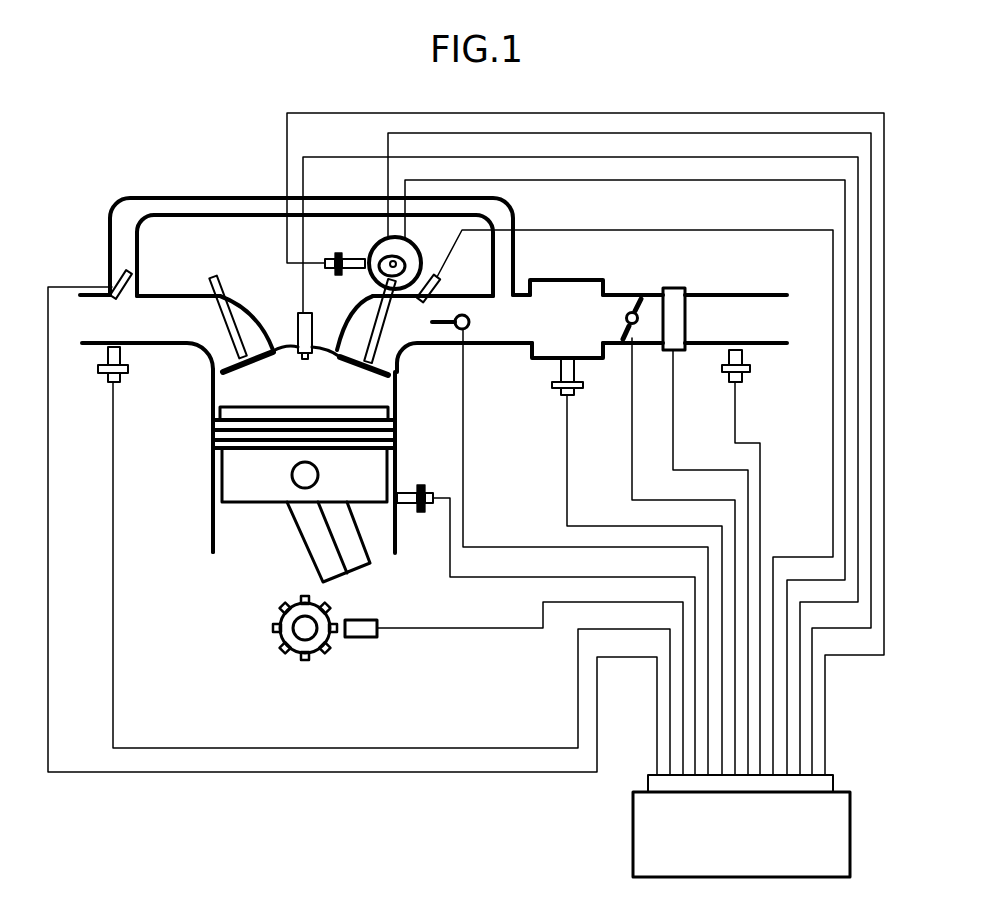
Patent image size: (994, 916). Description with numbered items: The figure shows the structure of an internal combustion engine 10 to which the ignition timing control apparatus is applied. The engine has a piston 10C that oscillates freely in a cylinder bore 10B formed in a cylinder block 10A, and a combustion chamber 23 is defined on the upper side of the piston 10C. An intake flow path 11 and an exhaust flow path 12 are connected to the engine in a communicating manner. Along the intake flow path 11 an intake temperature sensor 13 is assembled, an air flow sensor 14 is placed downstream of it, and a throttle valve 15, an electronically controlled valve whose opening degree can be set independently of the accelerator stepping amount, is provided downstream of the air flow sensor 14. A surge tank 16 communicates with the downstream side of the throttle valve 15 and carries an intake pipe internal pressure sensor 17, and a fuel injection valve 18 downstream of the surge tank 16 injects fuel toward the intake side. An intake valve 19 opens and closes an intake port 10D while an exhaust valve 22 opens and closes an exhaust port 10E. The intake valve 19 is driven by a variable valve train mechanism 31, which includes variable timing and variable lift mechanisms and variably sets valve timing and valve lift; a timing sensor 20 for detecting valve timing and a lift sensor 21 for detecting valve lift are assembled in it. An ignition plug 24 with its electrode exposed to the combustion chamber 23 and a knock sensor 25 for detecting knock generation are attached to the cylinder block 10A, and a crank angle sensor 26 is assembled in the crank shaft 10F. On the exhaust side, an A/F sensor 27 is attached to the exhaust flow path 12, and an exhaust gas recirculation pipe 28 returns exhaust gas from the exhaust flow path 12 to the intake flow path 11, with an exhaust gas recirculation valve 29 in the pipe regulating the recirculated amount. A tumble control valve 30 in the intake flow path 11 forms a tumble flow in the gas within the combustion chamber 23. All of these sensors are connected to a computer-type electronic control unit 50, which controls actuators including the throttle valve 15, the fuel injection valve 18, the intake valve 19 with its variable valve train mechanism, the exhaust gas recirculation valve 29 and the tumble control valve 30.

The internal combustion engine 10 is at (200, 503).
The cylinder block 10A is at (212, 535).
The cylinder bore 10B is at (393, 415).
The piston 10C is at (253, 500).
The intake port 10D is at (399, 372).
The exhaust port 10E is at (212, 355).
The crank shaft 10F is at (302, 637).
The intake flow path 11 is at (518, 348).
The exhaust flow path 12 is at (173, 303).
The intake temperature sensor 13 is at (745, 378).
The air flow sensor 14 is at (680, 287).
The throttle valve 15 is at (630, 297).
The surge tank 16 is at (563, 288).
The intake pipe internal pressure sensor 17 is at (575, 395).
The fuel injection valve 18 is at (445, 281).
The intake valve 19 is at (362, 312).
The timing sensor 20 is at (287, 265).
The lift sensor 21 is at (363, 260).
The exhaust valve 22 is at (213, 275).
The combustion chamber 23 is at (212, 402).
The ignition plug 24 is at (297, 330).
The knock sensor 25 is at (404, 507).
The crank angle sensor 26 is at (338, 638).
The A/F sensor 27 is at (108, 385).
The exhaust gas recirculation pipe 28 is at (203, 198).
The exhaust gas recirculation valve 29 is at (110, 280).
The tumble control valve 30 is at (472, 346).
The variable valve train mechanism 31 is at (380, 242).
The electronic control unit (ECU) 50 is at (632, 836).